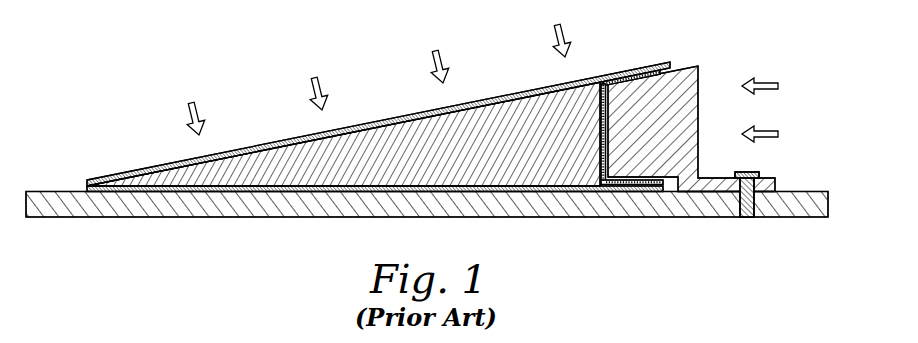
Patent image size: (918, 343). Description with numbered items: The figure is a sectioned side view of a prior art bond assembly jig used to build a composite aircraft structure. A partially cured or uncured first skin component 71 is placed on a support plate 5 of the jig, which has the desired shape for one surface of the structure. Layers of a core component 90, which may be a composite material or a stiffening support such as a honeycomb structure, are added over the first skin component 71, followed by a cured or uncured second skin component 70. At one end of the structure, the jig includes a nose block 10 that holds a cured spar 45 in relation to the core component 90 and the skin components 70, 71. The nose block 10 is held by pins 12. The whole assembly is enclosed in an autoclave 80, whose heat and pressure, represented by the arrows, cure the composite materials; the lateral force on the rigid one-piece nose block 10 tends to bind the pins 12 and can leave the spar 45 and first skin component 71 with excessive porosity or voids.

The support plate 5 is at (338, 205).
The nose block 10 is at (672, 117).
The pins 12 is at (745, 215).
The spar 45 is at (638, 185).
The second skin component 70 is at (158, 166).
The first skin component 71 is at (488, 188).
The autoclave 80 is at (246, 70).
The core component 90 is at (270, 172).